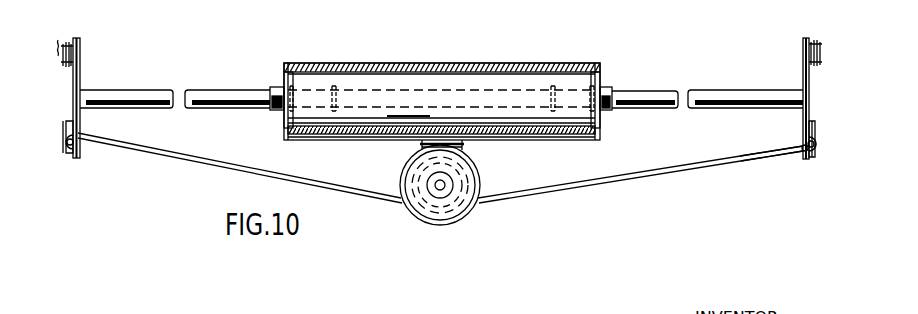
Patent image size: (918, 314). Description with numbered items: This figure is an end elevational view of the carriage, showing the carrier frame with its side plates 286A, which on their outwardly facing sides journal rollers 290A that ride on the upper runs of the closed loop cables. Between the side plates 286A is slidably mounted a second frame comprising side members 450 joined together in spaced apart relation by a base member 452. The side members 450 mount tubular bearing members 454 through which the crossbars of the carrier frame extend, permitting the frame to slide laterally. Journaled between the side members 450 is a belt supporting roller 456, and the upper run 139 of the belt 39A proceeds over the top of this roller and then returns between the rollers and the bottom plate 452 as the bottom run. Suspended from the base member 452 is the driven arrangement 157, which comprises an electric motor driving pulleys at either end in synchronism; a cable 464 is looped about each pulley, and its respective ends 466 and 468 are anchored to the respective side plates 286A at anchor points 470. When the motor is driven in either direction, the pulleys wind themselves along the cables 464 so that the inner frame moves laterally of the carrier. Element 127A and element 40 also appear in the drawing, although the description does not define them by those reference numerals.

The roller 290A is at (57, 44).
The side plate 286A is at (80, 70).
The clevis bracket 127A is at (67, 145).
The side member 450 is at (283, 68).
The upper run 139 is at (366, 64).
The belt 39A is at (420, 63).
The belt supporting roller 456 is at (505, 80).
The tubular bearing member 454 is at (612, 81).
The bracket 40 is at (358, 141).
The base member 452 is at (558, 141).
The driven arrangement 157 is at (433, 232).
The cable end 468 is at (108, 145).
The cable 464 is at (556, 201).
The cable end 466 is at (776, 160).
The anchor point 470 is at (800, 158).